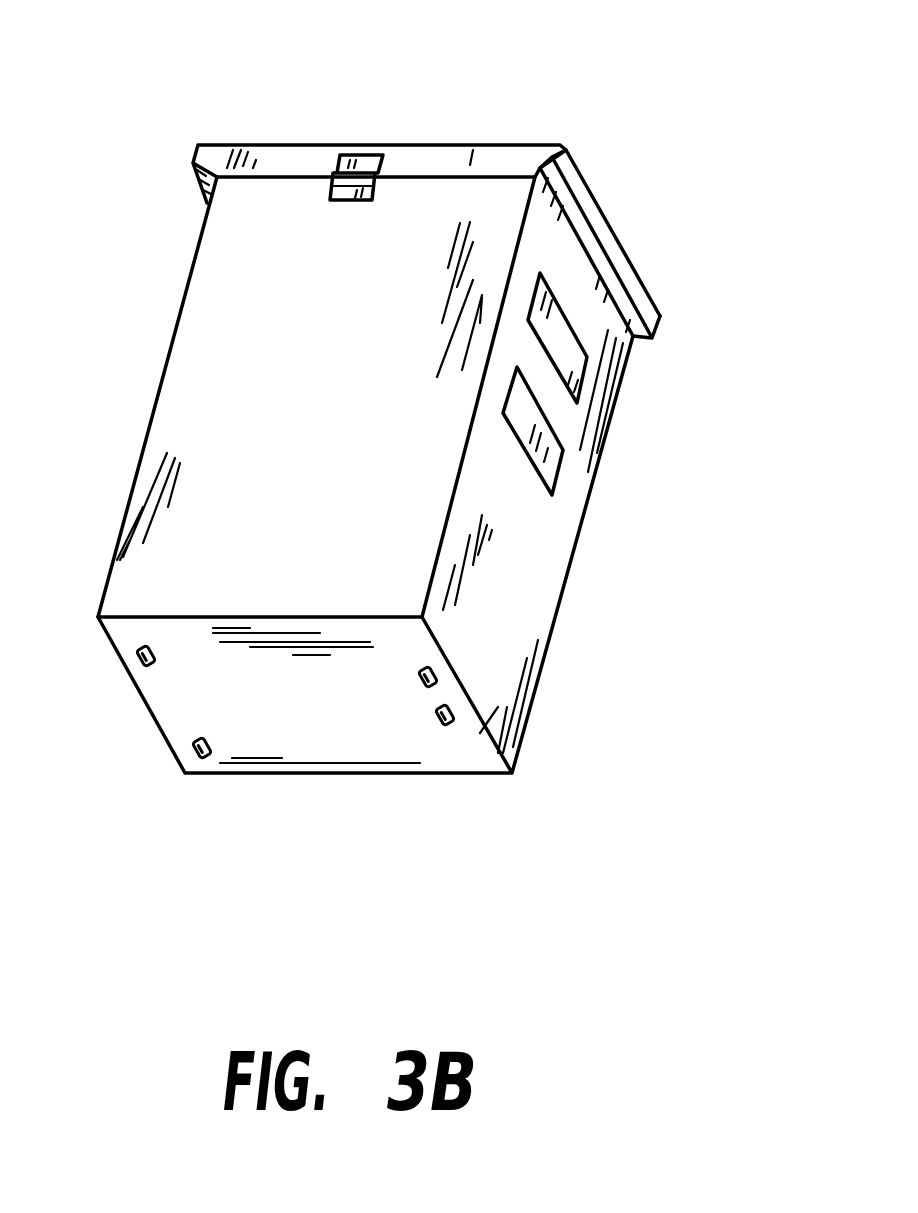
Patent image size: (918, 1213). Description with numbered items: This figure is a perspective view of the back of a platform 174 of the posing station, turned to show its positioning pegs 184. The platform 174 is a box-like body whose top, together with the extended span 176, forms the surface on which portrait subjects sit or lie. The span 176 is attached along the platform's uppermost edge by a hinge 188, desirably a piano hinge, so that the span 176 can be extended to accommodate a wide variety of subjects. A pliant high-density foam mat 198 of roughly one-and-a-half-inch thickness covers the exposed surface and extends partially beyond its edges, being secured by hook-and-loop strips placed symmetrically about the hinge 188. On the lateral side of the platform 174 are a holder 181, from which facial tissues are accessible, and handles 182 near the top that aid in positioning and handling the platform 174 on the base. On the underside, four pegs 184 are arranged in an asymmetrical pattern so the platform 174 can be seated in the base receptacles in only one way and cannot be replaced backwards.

The platform 174 is at (213, 343).
The span 176 is at (567, 160).
The holder 181 is at (548, 452).
The handles 182 is at (578, 360).
The pegs 184 is at (192, 748).
The hinge 188 is at (353, 157).
The foam mat 198 is at (650, 340).